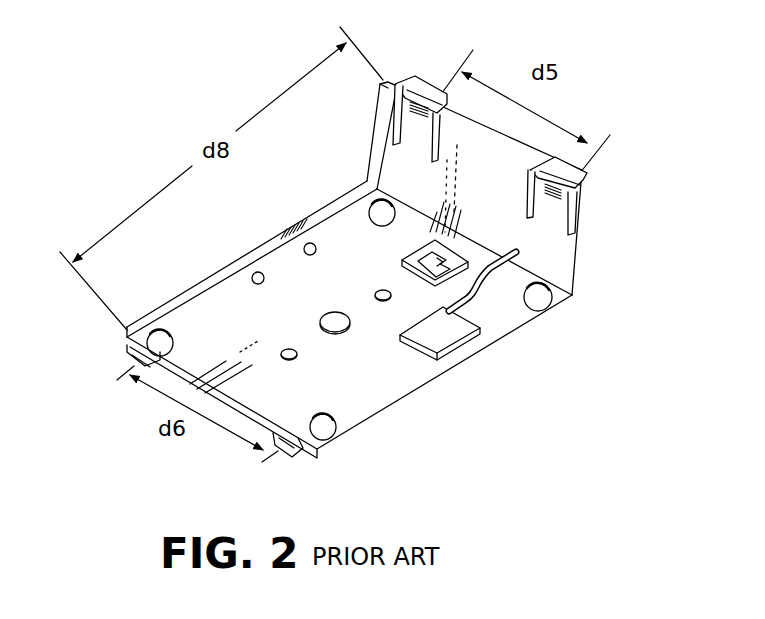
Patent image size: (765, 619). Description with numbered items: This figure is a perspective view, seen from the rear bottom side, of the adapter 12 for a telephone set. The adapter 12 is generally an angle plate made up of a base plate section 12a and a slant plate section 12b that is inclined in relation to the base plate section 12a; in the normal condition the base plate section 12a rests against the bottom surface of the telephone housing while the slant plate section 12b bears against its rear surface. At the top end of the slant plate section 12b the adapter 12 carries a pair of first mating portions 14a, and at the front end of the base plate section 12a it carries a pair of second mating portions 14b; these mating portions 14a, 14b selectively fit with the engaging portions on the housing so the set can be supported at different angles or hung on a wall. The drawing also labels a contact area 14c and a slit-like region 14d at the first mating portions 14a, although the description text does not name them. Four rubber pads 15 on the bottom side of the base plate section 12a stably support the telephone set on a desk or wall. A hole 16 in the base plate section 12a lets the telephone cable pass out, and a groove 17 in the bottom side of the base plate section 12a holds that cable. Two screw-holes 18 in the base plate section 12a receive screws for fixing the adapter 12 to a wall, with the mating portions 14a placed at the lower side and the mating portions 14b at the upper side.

The adapter 12 is at (354, 270).
The base plate section 12a is at (420, 378).
The slant plate section 12b is at (397, 167).
The first mating portions 14a is at (429, 76).
The second mating portions 14b is at (122, 357).
The contact portion 14c is at (445, 111).
The slit 14d is at (424, 138).
The rubber pads 15 is at (158, 331).
The hole 16 is at (460, 332).
The groove 17 is at (521, 254).
The screw-holes 18 is at (287, 348).